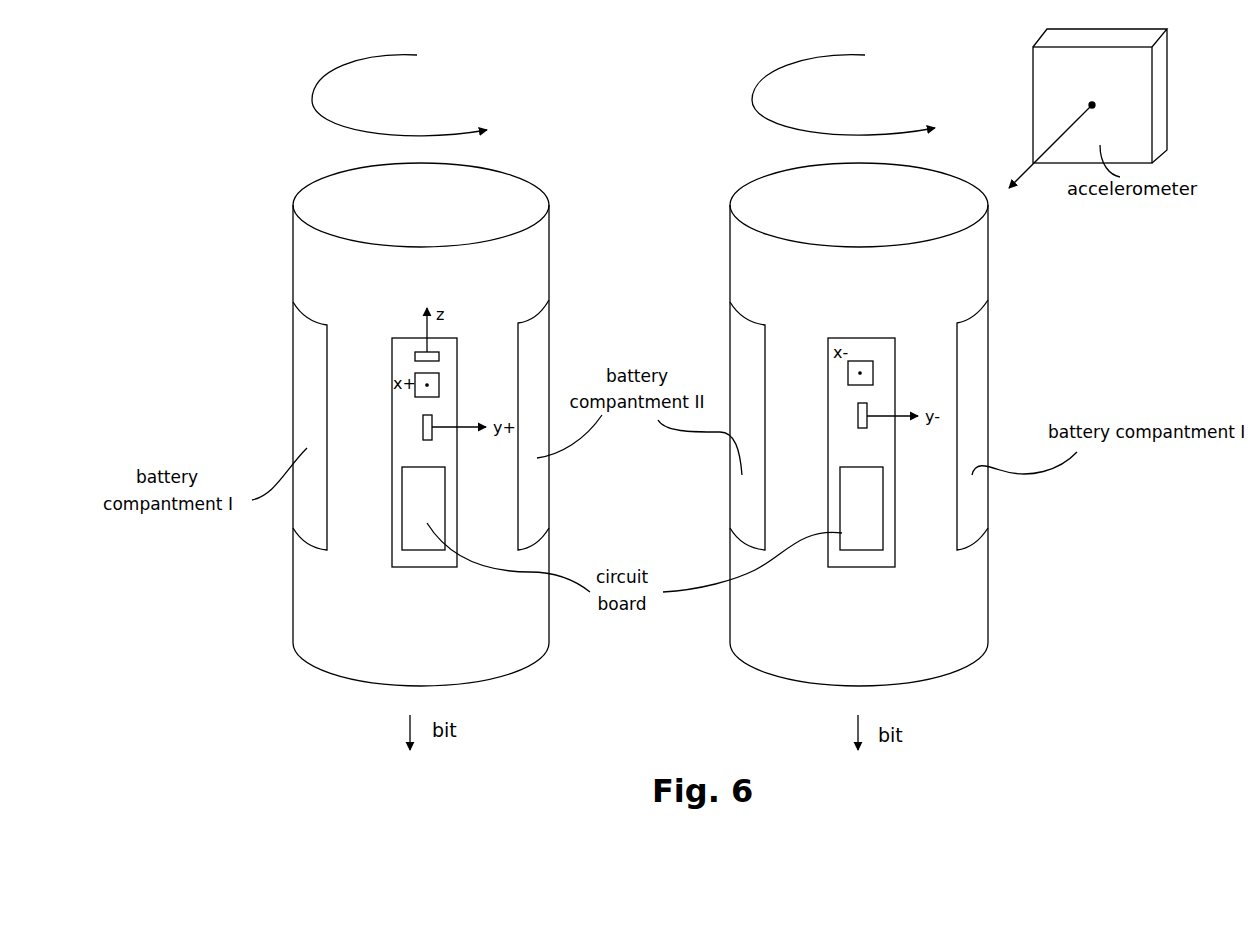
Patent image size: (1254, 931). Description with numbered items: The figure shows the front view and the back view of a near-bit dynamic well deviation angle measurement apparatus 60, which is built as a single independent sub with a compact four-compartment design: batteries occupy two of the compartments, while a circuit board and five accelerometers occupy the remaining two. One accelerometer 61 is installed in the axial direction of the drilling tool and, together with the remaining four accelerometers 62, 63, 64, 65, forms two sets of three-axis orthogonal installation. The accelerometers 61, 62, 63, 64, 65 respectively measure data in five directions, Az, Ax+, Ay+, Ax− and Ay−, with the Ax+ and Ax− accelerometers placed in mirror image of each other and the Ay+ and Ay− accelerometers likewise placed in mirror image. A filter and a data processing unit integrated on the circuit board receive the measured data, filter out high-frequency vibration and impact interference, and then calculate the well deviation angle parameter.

The near-bit dynamic well deviation angle measurement apparatus 60 is at (758, 257).
The accelerometer 61 is at (415, 355).
The accelerometer 62 is at (415, 391).
The accelerometer 63 is at (873, 372).
The accelerometer 64 is at (423, 427).
The accelerometer 65 is at (868, 402).